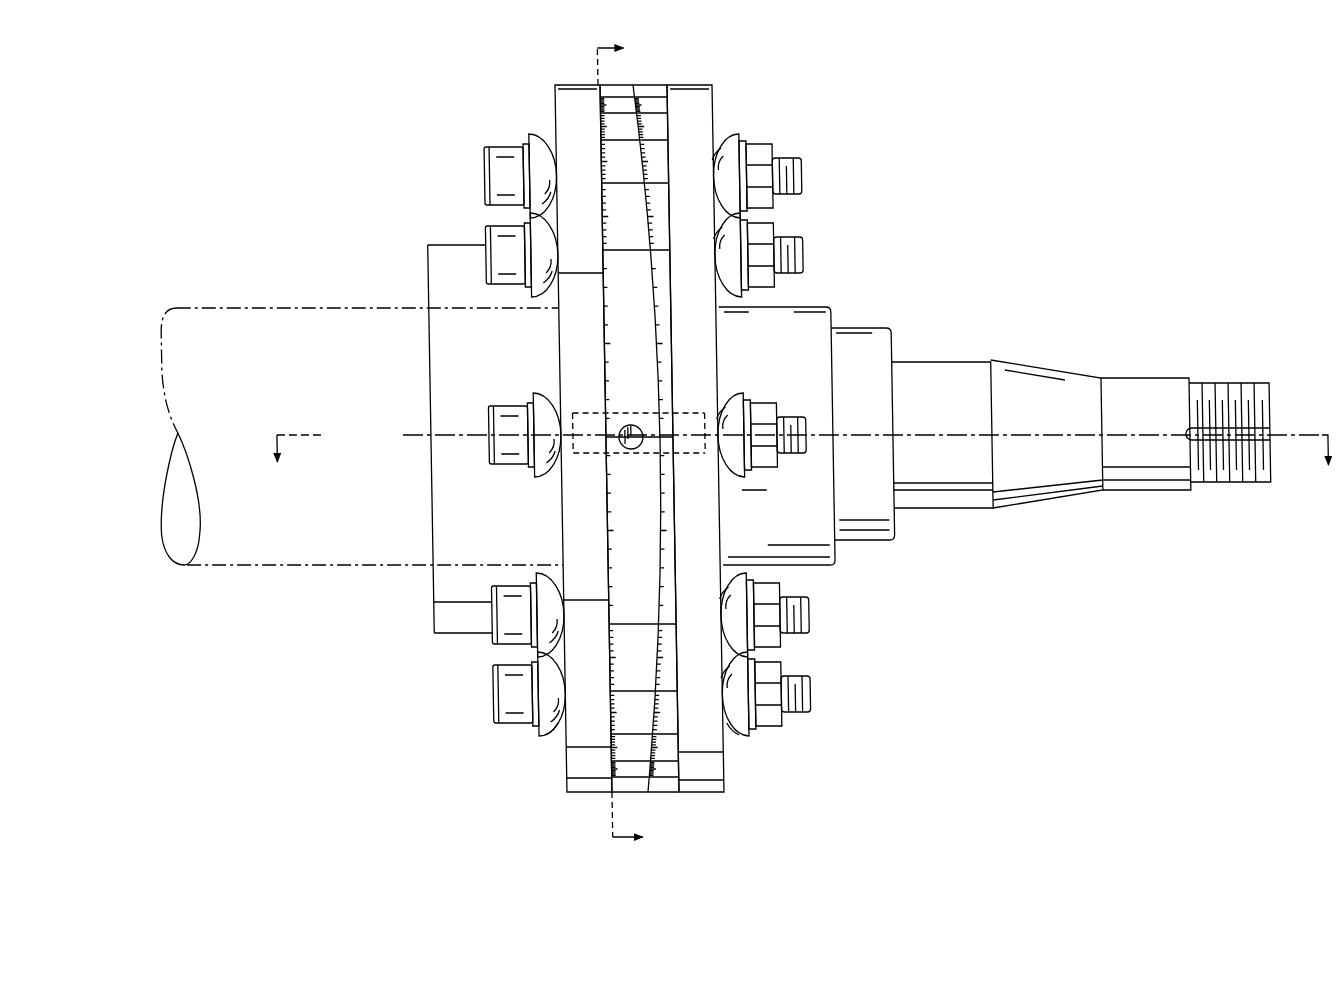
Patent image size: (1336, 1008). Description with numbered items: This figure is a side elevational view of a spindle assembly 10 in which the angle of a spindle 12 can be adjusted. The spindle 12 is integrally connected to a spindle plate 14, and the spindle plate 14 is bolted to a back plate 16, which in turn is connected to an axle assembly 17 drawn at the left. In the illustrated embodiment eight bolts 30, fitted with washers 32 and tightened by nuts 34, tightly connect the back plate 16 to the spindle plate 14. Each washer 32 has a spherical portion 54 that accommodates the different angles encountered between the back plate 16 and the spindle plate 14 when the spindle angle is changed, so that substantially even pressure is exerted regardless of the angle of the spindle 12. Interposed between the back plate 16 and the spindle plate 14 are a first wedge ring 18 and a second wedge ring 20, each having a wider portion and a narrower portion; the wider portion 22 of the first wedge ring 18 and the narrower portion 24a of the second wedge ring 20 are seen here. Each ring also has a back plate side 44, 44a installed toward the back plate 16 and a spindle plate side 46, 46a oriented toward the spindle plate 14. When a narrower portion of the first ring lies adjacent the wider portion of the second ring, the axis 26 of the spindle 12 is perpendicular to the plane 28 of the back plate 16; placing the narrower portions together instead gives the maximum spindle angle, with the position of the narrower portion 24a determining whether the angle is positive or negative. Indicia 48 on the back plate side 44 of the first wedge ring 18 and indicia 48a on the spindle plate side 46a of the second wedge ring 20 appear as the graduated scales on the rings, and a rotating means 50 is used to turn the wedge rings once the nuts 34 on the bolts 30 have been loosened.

The spindle assembly 10 is at (744, 456).
The spindle 12 is at (1008, 362).
The spindle plate 14 is at (702, 110).
The back plate 16 is at (565, 108).
The axle assembly 17 is at (440, 253).
The first wedge ring 18 is at (634, 433).
The second wedge ring 20 is at (646, 433).
The wider portion 22 is at (615, 407).
The narrower portion 24a is at (664, 440).
The axis 26 is at (939, 435).
The plane 28 is at (602, 387).
The bolts 30 is at (797, 238).
The washers 32 is at (540, 752).
The nuts 34 is at (767, 673).
The back plate side 44 is at (596, 310).
The back plate side 44a is at (643, 355).
The spindle plate side 46 is at (655, 395).
The spindle plate side 46a is at (716, 323).
The indicia 48 is at (614, 577).
The indicia 48a is at (655, 575).
The rotating means 50 is at (621, 447).
The spherical portion 54 is at (725, 140).